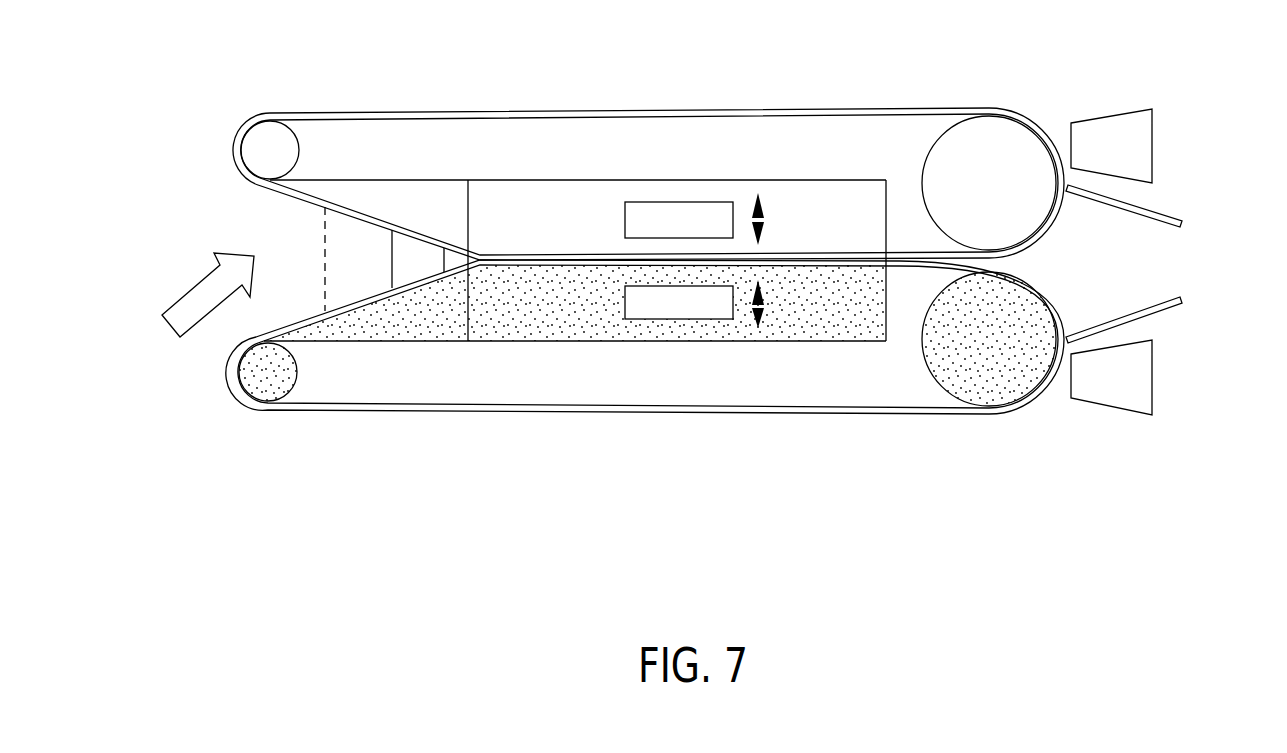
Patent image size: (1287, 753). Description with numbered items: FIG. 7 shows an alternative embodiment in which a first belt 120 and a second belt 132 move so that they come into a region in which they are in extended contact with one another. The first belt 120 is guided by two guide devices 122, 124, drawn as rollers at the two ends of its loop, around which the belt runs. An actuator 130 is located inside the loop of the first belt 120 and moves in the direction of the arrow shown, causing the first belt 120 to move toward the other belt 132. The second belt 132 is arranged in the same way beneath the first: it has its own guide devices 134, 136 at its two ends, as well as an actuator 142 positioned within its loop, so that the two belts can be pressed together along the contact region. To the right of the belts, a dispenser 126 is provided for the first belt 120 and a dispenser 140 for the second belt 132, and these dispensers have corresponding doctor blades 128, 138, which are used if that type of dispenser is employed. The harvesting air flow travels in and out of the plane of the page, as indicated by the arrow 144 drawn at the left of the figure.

The first belt 120 is at (792, 110).
The guide device 122 is at (1008, 135).
The guide device 124 is at (300, 145).
The dispenser 126 is at (1153, 147).
The doctor blade 128 is at (1183, 218).
The actuator 130 is at (610, 180).
The second belt 132 is at (789, 413).
The guide device 134 is at (1008, 392).
The guide device 136 is at (273, 390).
The doctor blade 138 is at (1153, 377).
The dispenser 140 is at (1183, 303).
The actuator 142 is at (577, 343).
The arrow 144 is at (188, 292).